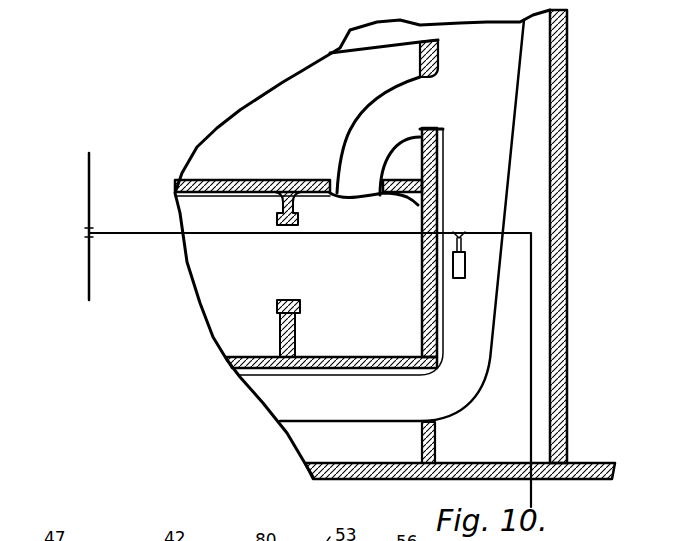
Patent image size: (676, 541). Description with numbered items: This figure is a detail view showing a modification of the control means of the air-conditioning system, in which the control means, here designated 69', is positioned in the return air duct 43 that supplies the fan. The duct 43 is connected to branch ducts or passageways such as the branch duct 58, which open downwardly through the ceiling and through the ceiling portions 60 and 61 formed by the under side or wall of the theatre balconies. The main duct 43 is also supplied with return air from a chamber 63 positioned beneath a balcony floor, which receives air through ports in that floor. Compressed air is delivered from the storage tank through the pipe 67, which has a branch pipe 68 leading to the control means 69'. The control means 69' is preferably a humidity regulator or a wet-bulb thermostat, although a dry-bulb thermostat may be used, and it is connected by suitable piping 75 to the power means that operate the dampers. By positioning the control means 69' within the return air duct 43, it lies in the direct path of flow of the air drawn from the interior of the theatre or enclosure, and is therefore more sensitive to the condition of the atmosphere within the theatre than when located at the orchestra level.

The duct 43 is at (500, 110).
The branch duct 58 is at (372, 126).
The ceiling portion 60 is at (221, 192).
The ceiling portion 61 is at (297, 453).
The chamber 63 is at (277, 387).
The pipe 67 is at (88, 210).
The branch pipe 68 is at (170, 232).
The control means 69' is at (540, 255).
The piping 75 is at (533, 350).